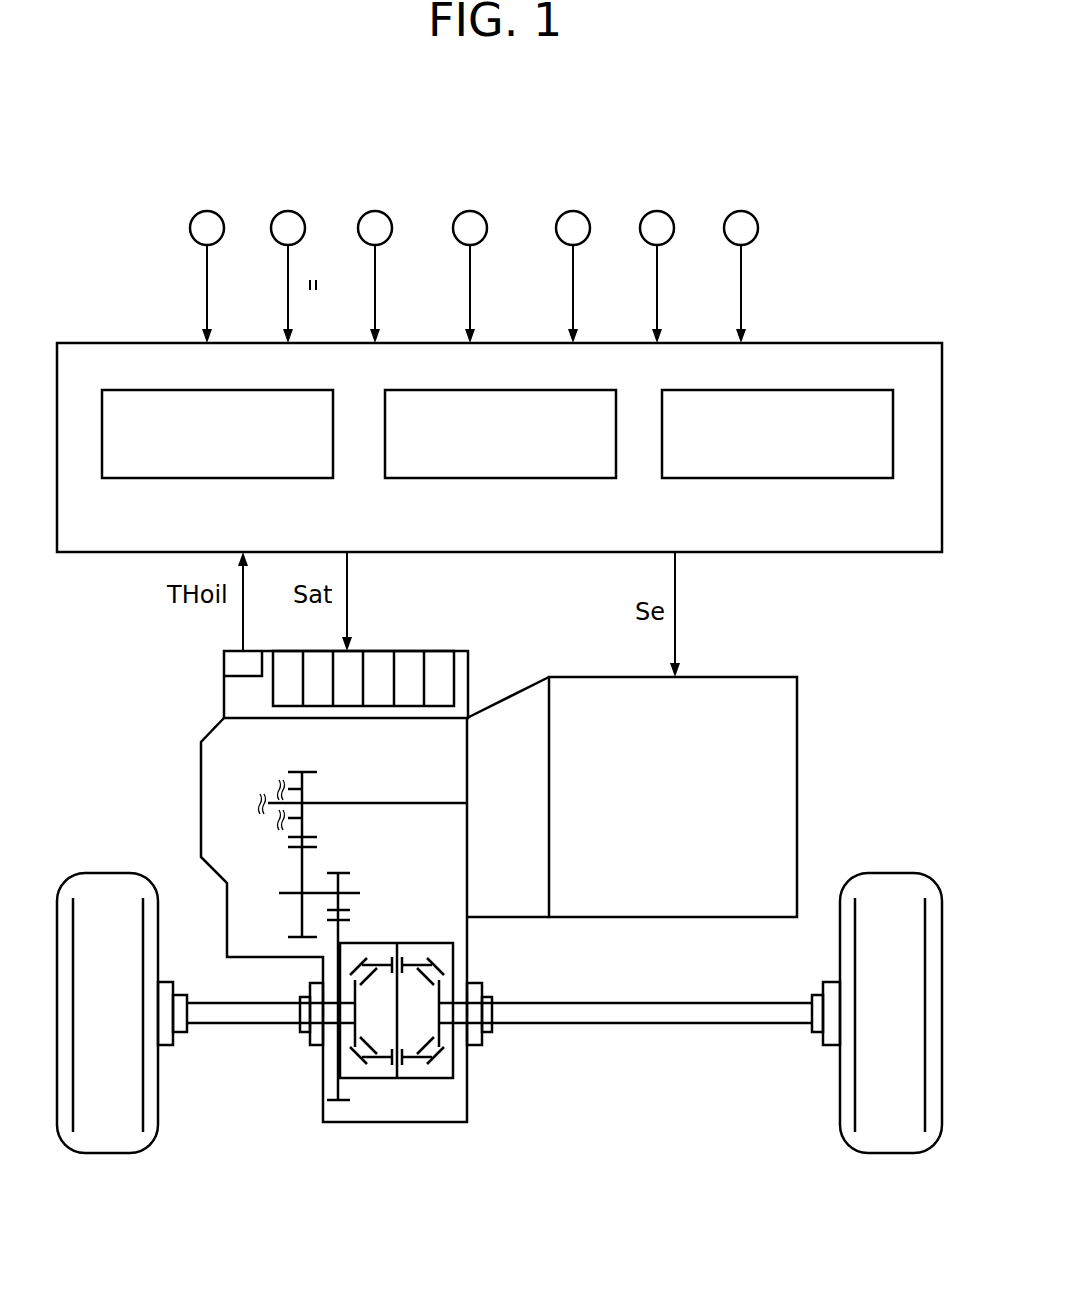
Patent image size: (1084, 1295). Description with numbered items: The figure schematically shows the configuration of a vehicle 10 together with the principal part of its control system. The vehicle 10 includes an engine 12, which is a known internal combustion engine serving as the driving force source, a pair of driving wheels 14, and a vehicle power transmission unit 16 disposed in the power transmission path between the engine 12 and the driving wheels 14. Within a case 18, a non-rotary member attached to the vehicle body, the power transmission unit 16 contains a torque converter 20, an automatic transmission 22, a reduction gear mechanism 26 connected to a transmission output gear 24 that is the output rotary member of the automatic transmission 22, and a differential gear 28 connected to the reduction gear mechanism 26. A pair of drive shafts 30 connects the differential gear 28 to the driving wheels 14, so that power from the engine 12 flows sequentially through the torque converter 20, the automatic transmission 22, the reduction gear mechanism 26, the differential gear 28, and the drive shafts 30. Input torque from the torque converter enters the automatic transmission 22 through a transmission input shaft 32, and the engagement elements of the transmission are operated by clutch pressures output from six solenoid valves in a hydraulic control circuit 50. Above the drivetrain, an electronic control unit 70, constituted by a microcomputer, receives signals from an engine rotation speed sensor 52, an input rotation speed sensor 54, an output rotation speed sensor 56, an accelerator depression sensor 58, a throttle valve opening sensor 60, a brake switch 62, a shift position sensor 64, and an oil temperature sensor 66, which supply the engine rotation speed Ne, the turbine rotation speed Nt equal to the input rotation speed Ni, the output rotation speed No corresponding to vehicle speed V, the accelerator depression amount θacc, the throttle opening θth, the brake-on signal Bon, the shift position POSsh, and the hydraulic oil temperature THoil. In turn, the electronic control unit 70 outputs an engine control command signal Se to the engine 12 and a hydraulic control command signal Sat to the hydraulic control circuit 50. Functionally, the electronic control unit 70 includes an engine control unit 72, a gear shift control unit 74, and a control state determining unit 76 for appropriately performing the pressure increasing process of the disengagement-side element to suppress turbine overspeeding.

The vehicle 10 is at (834, 122).
The engine 12 is at (727, 693).
The driving wheels 14 is at (100, 888).
The vehicle power transmission unit 16 is at (172, 652).
The case 18 is at (212, 735).
The torque converter 20 is at (508, 730).
The automatic transmission 22 is at (303, 915).
The transmission output gear 24 is at (297, 770).
The reduction gear mechanism 26 is at (372, 872).
The differential gear 28 is at (415, 1102).
The drive shafts 30 is at (207, 1015).
The transmission input shaft 32 is at (453, 800).
The hydraulic control circuit 50 is at (458, 662).
The engine rotation speed sensor 52 is at (207, 222).
The input rotation speed sensor 54 is at (288, 222).
The output rotation speed sensor 56 is at (375, 222).
The accelerator depression sensor 58 is at (470, 222).
The throttle valve opening sensor 60 is at (573, 222).
The brake switch 62 is at (657, 222).
The shift position sensor 64 is at (741, 222).
The oil temperature sensor 66 is at (248, 662).
The electronic control unit 70 is at (499, 478).
The engine control unit 72 is at (272, 400).
The gear shift control unit 74 is at (555, 400).
The control state determining unit 76 is at (832, 400).